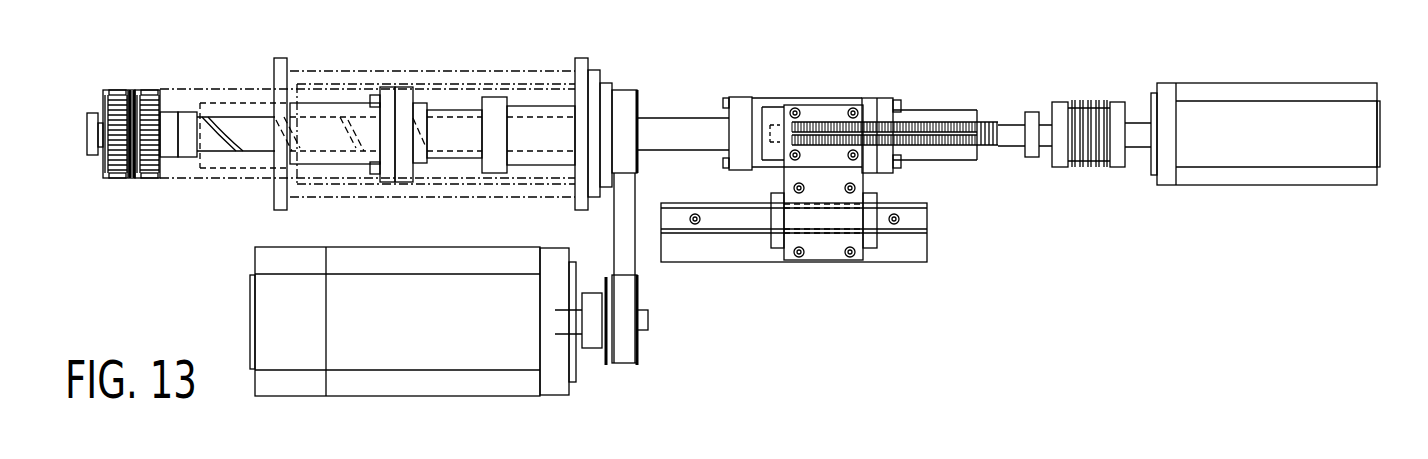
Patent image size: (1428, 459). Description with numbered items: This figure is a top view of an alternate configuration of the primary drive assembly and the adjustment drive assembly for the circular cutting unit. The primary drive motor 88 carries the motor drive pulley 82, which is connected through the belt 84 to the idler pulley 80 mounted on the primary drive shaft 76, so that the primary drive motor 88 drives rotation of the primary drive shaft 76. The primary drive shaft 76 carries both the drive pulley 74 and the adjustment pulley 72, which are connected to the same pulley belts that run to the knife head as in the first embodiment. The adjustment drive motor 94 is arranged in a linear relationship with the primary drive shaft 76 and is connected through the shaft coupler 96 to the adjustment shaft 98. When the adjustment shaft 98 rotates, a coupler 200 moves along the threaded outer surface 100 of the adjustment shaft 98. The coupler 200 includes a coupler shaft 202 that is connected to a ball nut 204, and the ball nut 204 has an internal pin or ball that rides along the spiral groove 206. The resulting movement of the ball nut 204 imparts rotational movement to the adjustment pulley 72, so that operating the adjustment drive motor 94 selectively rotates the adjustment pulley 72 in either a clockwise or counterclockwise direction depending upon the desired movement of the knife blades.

The adjustment pulley 72 is at (148, 88).
The drive pulley 74 is at (105, 167).
The primary drive shaft 76 is at (235, 120).
The ball nut 204 is at (325, 103).
The spiral groove 206 is at (220, 140).
The idler pulley 80 is at (640, 105).
The pulley belt 84 is at (625, 263).
The primary drive pulley 82 is at (637, 345).
The primary drive motor 88 is at (433, 390).
The coupler shaft 202 is at (682, 118).
The coupler 200 is at (770, 97).
The threaded outer surface 100 is at (990, 122).
The adjustment shaft 98 is at (1015, 137).
The shaft coupler 96 is at (1060, 102).
The adjustment drive motor 94 is at (1260, 90).